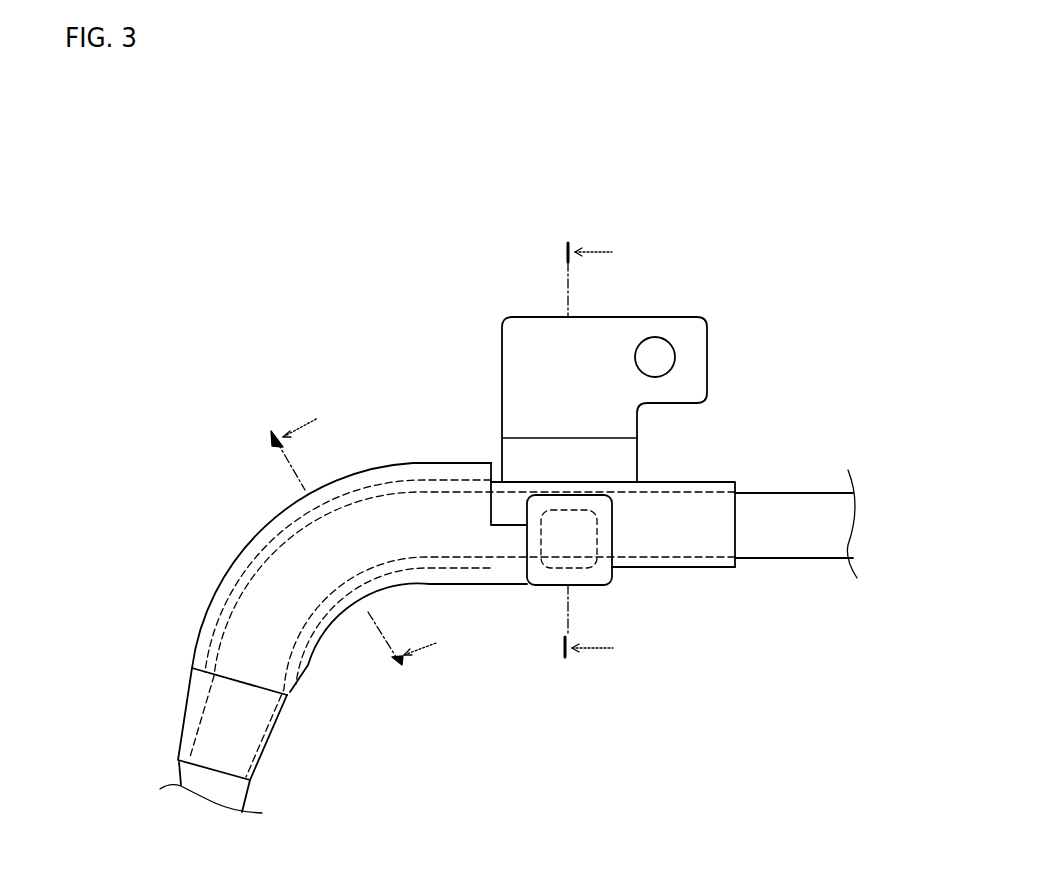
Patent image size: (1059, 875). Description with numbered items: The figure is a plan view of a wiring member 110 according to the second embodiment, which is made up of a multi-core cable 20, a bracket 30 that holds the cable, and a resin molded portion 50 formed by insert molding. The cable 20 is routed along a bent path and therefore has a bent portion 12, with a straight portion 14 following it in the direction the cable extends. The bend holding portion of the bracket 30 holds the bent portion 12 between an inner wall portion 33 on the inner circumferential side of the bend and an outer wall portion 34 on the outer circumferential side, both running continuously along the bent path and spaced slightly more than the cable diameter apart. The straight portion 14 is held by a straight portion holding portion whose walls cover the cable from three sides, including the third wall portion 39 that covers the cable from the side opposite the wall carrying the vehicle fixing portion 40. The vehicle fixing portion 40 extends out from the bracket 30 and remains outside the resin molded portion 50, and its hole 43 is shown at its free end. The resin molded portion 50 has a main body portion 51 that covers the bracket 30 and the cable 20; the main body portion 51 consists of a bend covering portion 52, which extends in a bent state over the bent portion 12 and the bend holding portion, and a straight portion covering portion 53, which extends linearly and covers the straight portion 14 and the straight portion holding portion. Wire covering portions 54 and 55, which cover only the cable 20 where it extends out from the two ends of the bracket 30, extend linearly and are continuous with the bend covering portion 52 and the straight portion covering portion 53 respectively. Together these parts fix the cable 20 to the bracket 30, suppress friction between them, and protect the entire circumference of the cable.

The wiring member 110 is at (412, 260).
The bent portion 12 is at (306, 672).
The straight portion 14 is at (695, 505).
The multi-core cable 20 is at (790, 548).
The bracket 30 is at (453, 469).
The inner wall portion 33 is at (319, 623).
The outer wall portion 34 is at (405, 478).
The third wall portion 39 is at (580, 566).
The vehicle fixing portion 40 is at (525, 330).
The mounting hole 43 is at (660, 338).
The resin molded portion 50 is at (259, 529).
The main body portion 51 is at (553, 660).
The bend covering portion 52 is at (475, 588).
The straight portion covering portion 53 is at (537, 588).
The wire covering portion 54 is at (270, 742).
The wire covering portion 55 is at (713, 569).